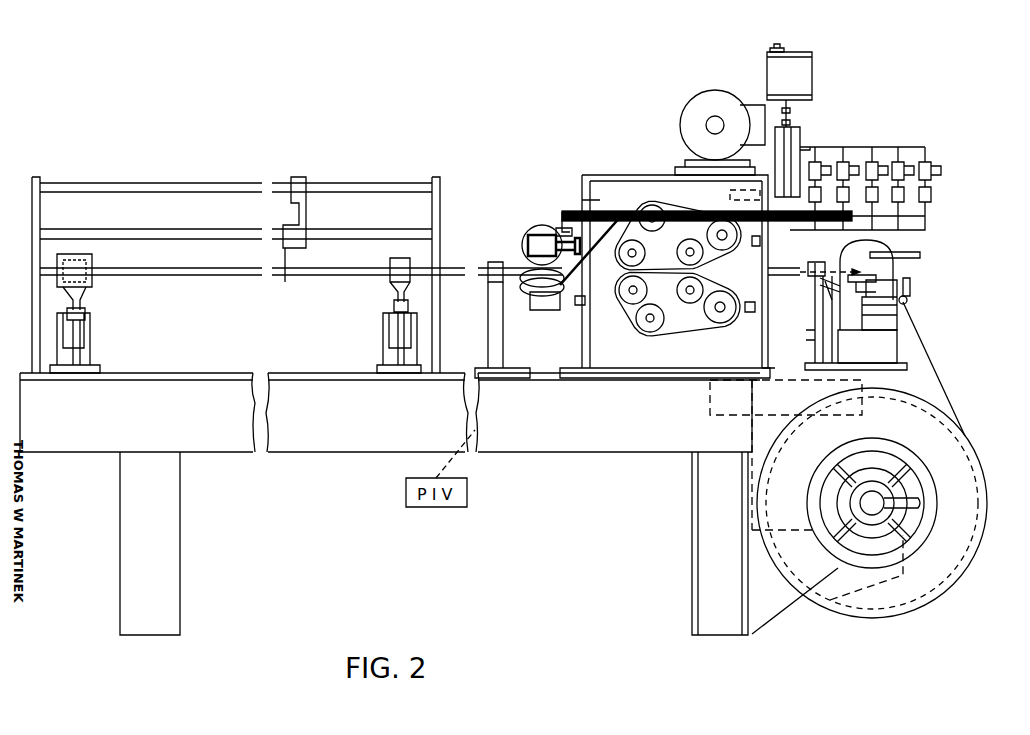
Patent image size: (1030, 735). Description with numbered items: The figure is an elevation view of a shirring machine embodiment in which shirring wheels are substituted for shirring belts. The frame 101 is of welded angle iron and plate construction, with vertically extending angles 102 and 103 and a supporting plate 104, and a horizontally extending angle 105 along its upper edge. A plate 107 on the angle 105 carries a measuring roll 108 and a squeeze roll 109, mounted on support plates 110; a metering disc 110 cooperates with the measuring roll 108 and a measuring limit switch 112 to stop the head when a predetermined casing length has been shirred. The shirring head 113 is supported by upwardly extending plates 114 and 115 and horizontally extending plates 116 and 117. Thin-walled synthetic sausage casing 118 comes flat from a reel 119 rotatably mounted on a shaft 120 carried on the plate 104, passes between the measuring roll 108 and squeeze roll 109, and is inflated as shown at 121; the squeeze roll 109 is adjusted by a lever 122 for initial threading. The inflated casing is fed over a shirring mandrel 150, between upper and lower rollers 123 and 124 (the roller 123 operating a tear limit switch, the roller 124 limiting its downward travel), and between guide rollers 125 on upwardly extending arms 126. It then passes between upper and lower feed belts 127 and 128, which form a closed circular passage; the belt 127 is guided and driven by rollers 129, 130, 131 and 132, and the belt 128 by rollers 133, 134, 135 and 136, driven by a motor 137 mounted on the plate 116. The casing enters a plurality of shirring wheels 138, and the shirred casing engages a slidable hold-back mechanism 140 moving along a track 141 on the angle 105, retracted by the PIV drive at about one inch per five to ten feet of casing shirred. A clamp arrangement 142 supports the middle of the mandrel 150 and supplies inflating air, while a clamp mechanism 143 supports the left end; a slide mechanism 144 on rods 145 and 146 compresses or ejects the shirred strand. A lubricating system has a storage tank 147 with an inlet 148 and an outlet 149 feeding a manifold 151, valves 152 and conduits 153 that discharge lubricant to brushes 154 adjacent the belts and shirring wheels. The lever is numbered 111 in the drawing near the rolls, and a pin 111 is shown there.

The frame 101 is at (660, 474).
The vertically extending angle 102 is at (182, 582).
The vertically extending angle 103 is at (700, 543).
The supporting plate 104 is at (800, 616).
The horizontally extending angle 105 is at (571, 451).
The plate 107 is at (893, 370).
The measuring roll 108 is at (855, 340).
The squeeze roll 109 is at (880, 248).
The metering disc 110 is at (900, 276).
The pin 111 is at (912, 288).
The measuring limit switch 112 is at (908, 303).
The shirring head 113 is at (580, 192).
The upwardly extending plate 114 is at (762, 368).
The upwardly extending plate 115 is at (591, 201).
The horizontally extending plate 116 is at (650, 164).
The horizontally extending plate 117 is at (642, 378).
The synthetic sausage casing 118 is at (950, 384).
The reel 119 is at (962, 560).
The shaft 120 is at (888, 486).
The inflated casing 121 is at (815, 263).
The lever 122 is at (918, 256).
The upper roller 123 is at (838, 254).
The lower roller 124 is at (813, 326).
The guide rollers 125 is at (812, 290).
The upwardly extending arms 126 is at (806, 343).
The upper feed belt 127 is at (676, 264).
The lower feed belt 128 is at (647, 285).
The roller 129 is at (646, 251).
The roller 130 is at (662, 224).
The roller 131 is at (724, 209).
The roller 132 is at (728, 255).
The roller 133 is at (638, 322).
The roller 134 is at (655, 332).
The roller 135 is at (718, 324).
The roller 136 is at (690, 304).
The motor 137 is at (696, 104).
The shirring wheels 138 is at (528, 234).
The hold-back mechanism 140 is at (492, 262).
The track 141 is at (502, 380).
The clamp arrangement 142 is at (388, 283).
The clamp mechanism 143 is at (93, 290).
The slide mechanism 144 is at (306, 246).
The rod 145 is at (150, 193).
The rod 146 is at (236, 244).
The storage tank 147 is at (765, 72).
The inlet 148 is at (777, 44).
The outlet 149 is at (792, 118).
The shirring mandrel 150 is at (178, 274).
The manifold 151 is at (890, 136).
The valves 152 is at (935, 178).
The conduits 153 is at (925, 230).
The brushes 154 is at (560, 215).